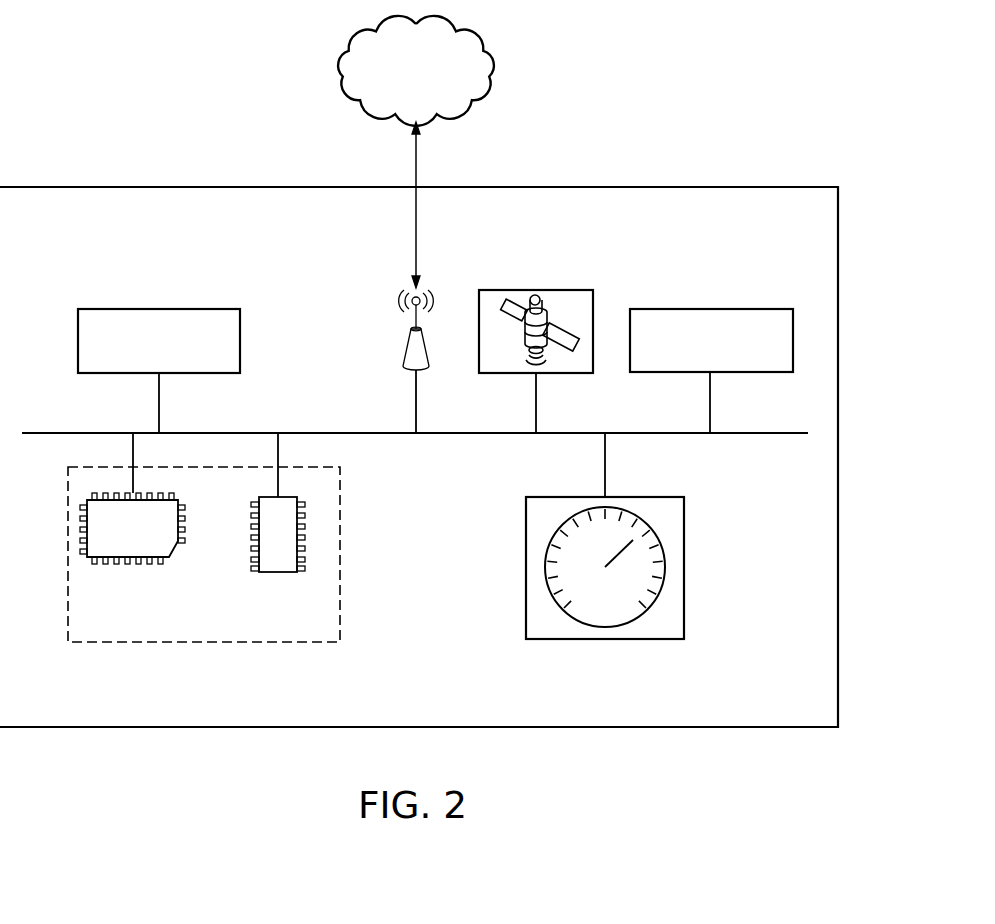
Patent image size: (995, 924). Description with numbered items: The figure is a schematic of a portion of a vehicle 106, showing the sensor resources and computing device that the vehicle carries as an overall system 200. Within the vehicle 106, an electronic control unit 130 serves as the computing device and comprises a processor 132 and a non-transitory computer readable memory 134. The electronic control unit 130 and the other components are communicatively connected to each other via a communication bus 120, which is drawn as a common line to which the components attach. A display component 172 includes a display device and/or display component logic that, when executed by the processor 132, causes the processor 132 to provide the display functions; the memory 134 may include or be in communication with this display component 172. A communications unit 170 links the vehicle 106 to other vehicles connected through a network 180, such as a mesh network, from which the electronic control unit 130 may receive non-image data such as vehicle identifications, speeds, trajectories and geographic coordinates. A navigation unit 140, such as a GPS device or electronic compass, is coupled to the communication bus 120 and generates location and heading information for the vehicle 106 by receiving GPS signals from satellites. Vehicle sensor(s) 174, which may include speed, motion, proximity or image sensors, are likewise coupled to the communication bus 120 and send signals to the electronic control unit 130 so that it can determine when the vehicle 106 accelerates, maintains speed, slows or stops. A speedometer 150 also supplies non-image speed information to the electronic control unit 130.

The system 200 is at (127, 113).
The vehicle 106 is at (838, 333).
The network 180 is at (491, 47).
The communication bus 120 is at (70, 432).
The display component 172 is at (158, 308).
The communications unit 170 is at (409, 339).
The navigation unit 140 is at (537, 290).
The vehicle sensor(s) 174 is at (710, 308).
The electronic control unit 130 is at (340, 553).
The processor 132 is at (172, 557).
The non-transitory computer readable memory 134 is at (277, 572).
The speedometer 150 is at (684, 565).